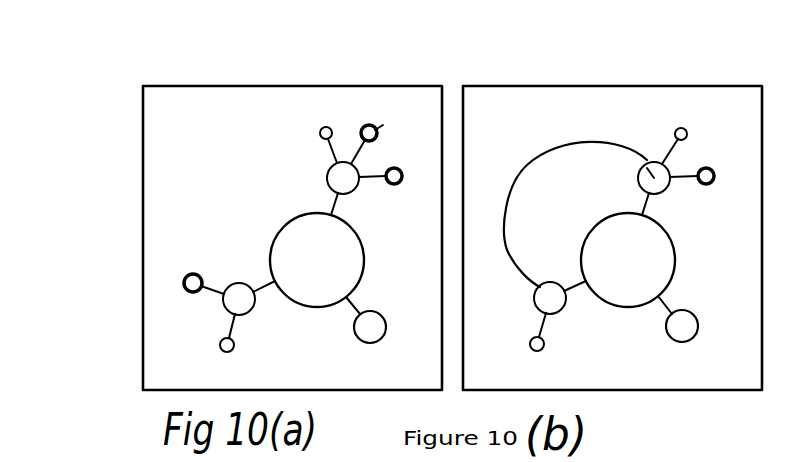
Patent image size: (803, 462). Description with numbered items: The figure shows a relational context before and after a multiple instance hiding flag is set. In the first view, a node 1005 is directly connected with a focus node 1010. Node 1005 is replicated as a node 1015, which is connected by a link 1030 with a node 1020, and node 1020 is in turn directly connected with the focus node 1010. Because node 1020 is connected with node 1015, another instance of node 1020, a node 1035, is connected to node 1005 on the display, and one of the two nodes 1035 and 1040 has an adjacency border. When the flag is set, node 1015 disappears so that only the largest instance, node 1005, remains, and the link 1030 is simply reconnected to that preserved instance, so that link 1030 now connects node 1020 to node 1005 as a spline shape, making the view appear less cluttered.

In FIG. 10A, the node 1005 is at (325, 182).
In FIG. 10A, the focus node 1010 is at (328, 278).
In FIG. 10A, the node 1015 is at (185, 287).
In FIG. 10A, the node 1020 is at (253, 317).
In FIG. 10A, the link 1030 is at (215, 275).
In FIG. 10B, the link 1030 is at (523, 160).
In FIG. 10A, the node 1035 is at (368, 125).
In FIG. 10A, the node 1040 is at (395, 188).